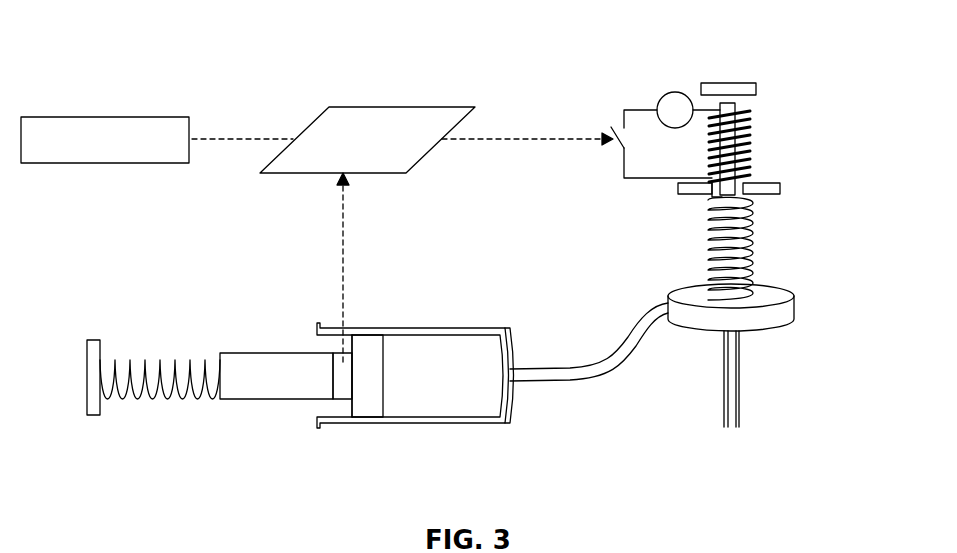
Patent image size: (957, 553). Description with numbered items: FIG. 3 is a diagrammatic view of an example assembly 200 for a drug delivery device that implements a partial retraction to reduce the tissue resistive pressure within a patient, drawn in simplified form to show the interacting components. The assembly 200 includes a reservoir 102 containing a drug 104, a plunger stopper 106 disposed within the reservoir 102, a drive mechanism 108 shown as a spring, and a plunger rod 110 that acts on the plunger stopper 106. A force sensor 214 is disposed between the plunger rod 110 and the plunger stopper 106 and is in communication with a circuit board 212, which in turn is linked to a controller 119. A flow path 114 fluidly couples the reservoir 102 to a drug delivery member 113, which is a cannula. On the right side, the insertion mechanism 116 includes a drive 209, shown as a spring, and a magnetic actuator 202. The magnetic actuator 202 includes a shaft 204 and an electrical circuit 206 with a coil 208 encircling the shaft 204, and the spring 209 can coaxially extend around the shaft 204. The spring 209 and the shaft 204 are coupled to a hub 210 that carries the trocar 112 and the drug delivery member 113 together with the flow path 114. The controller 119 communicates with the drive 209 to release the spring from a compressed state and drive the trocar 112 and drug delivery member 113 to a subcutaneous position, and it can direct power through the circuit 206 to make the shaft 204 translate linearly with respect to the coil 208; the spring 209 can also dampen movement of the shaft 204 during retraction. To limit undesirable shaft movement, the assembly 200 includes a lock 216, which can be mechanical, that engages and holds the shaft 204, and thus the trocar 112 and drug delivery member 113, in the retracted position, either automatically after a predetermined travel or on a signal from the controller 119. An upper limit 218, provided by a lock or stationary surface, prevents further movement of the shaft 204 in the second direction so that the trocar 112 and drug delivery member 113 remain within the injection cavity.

The assembly 200 is at (136, 47).
The controller 119 is at (87, 117).
The circuit board 212 is at (404, 107).
The electrical circuit 206 is at (641, 108).
The upper limit 218 is at (728, 82).
The coil 208 is at (744, 140).
The shaft 204 is at (748, 178).
The magnetic actuator 202 is at (686, 199).
The lock 216 is at (710, 205).
The drive 209 is at (748, 252).
The hub 210 is at (796, 306).
The drug delivery member 113 is at (741, 368).
The trocar 112 is at (738, 418).
The flow path 114 is at (578, 380).
The reservoir 102 is at (455, 424).
The drug 104 is at (443, 377).
The plunger stopper 106 is at (368, 411).
The force sensor 214 is at (340, 362).
The plunger rod 110 is at (247, 399).
The drive mechanism 108 is at (145, 396).
The insertion mechanism 116 is at (814, 206).